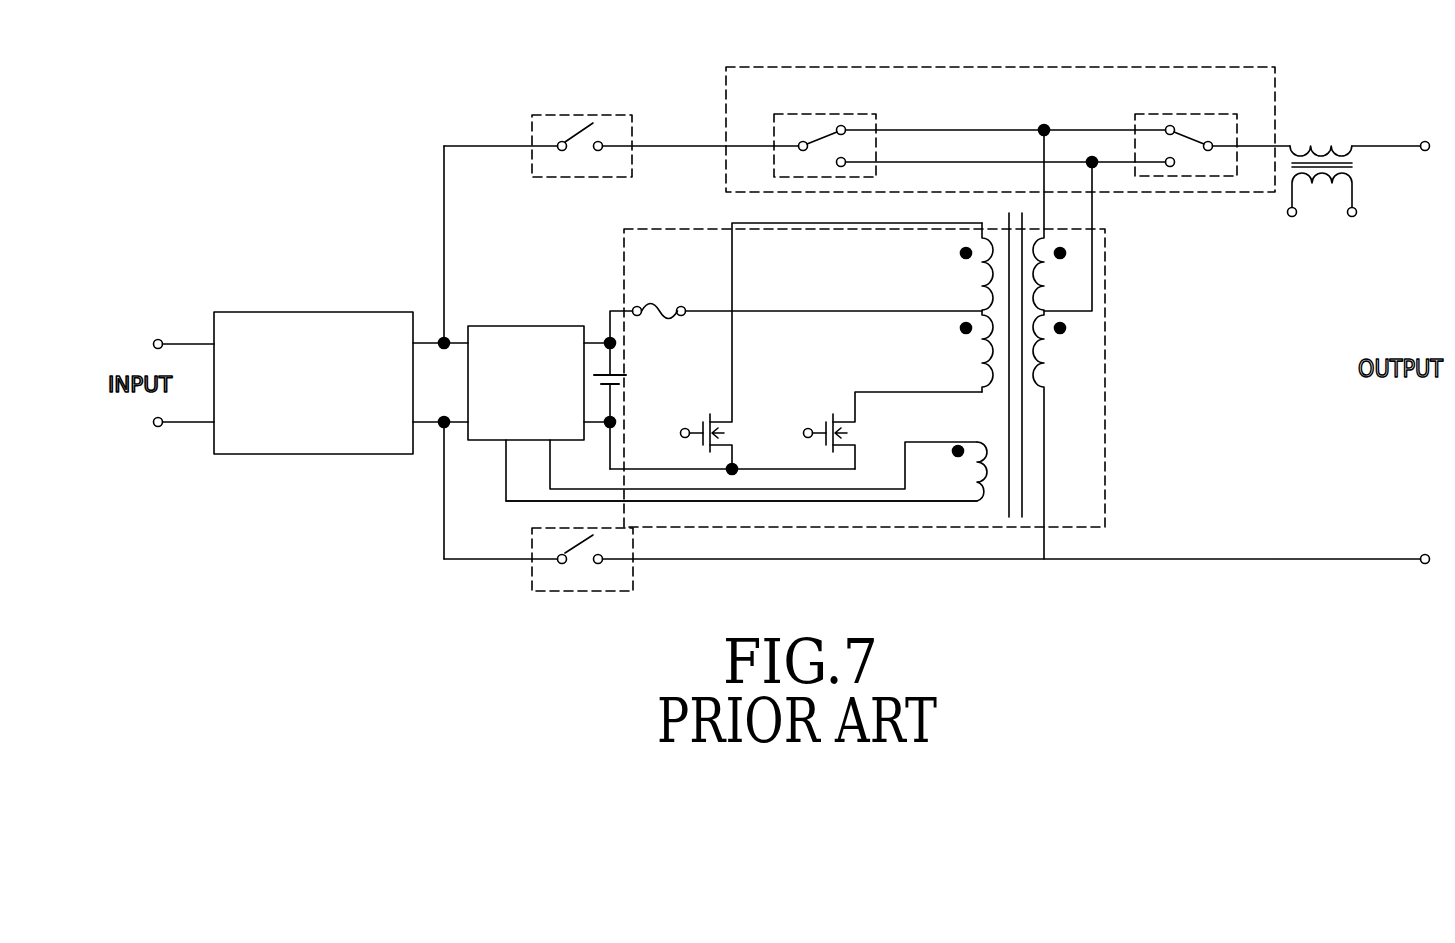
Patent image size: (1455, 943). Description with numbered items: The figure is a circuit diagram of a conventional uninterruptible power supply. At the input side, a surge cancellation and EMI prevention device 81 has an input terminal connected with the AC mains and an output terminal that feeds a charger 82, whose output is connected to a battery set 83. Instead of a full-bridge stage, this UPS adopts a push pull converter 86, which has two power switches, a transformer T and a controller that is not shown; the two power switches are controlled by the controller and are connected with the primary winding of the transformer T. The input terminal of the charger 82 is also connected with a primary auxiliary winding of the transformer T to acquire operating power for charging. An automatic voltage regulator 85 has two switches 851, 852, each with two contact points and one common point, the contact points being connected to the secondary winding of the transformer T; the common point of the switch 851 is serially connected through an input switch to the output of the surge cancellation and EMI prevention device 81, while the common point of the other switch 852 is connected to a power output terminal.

The surge cancellation and EMI prevention device 81 is at (310, 312).
The charger 82 is at (505, 326).
The battery set 83 is at (631, 382).
The automatic voltage regulator 85 is at (1000, 107).
The switch 851 is at (806, 113).
The switch 852 is at (1156, 113).
The push pull converter 86 is at (1105, 412).